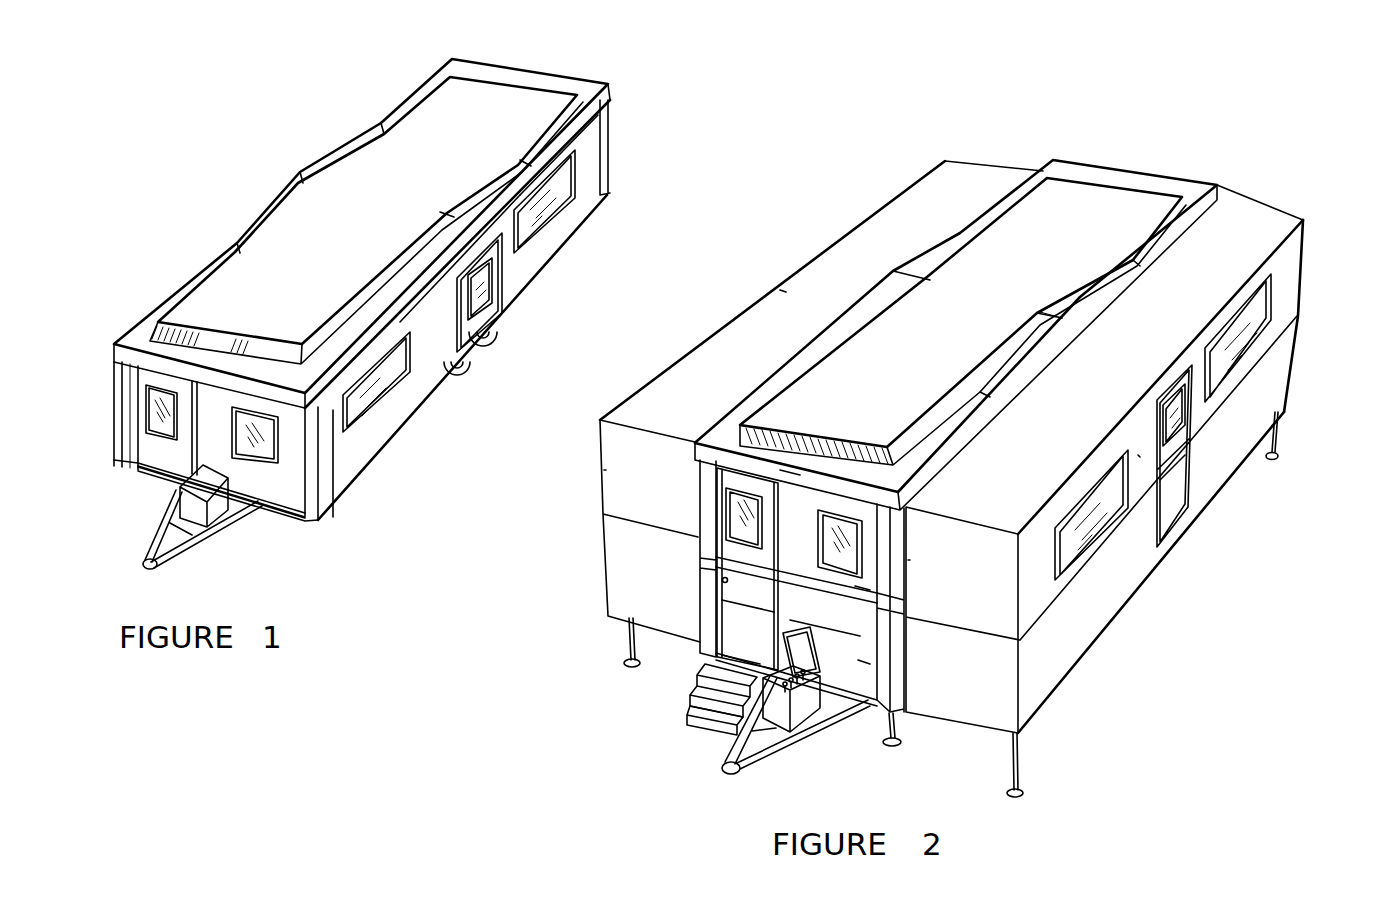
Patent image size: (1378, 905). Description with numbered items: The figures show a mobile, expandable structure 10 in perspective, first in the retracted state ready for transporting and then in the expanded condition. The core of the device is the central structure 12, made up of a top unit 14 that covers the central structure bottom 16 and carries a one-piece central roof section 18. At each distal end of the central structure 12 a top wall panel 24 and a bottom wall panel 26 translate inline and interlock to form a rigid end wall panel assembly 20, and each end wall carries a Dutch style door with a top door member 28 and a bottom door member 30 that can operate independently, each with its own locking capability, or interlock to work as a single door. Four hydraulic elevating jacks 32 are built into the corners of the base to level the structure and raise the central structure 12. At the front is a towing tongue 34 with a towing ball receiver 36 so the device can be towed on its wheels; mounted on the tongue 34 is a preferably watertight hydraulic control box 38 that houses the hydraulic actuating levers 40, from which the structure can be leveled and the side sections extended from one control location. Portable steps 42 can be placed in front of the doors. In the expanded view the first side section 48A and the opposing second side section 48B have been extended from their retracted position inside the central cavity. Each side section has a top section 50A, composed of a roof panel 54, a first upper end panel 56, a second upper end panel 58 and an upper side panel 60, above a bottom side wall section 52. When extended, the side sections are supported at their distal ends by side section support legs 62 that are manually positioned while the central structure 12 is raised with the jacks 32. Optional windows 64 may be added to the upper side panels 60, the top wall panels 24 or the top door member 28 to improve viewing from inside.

In FIG. 1, the mobile expandable structure 10 is at (644, 130).
In FIG. 2, the mobile expandable structure 10 is at (1156, 140).
In FIG. 1, the central structure 12 is at (136, 521).
In FIG. 2, the central structure 12 is at (676, 661).
In FIG. 1, the top unit 14 is at (262, 560).
In FIG. 2, the top unit 14 is at (862, 590).
In FIG. 1, the central structure bottom 16 is at (250, 535).
In FIG. 2, the central structure bottom 16 is at (864, 665).
In FIG. 1, the central roof section 18 is at (415, 163).
In FIG. 2, the central roof section 18 is at (1024, 250).
In FIG. 2, the end wall panel assembly 20 is at (790, 514).
In FIG. 1, the top wall panel 24 is at (277, 490).
In FIG. 2, the top wall panel 24 is at (803, 507).
In FIG. 2, the bottom wall panel 26 is at (822, 640).
In FIG. 1, the top door member 28 is at (485, 318).
In FIG. 2, the top door member 28 is at (732, 548).
In FIG. 2, the bottom door member 30 is at (727, 625).
In FIG. 2, the hydraulic elevating jack 32 is at (900, 718).
In FIG. 2, the towing tongue 34 is at (772, 752).
In FIG. 2, the towing ball receiver 36 is at (722, 763).
In FIG. 1, the hydraulic control box 38 is at (212, 507).
In FIG. 2, the hydraulic control box 38 is at (803, 707).
In FIG. 2, the hydraulic actuating lever 40 is at (720, 677).
In FIG. 2, the portable steps 42 is at (690, 718).
In FIG. 1, the first side section 48A is at (634, 196).
In FIG. 2, the first side section 48A is at (1200, 542).
In FIG. 2, the second side section 48B is at (575, 514).
In FIG. 1, the top section 50A is at (583, 254).
In FIG. 2, the top section 50A is at (1311, 283).
In FIG. 2, the bottom side wall section 52 is at (1227, 435).
In FIG. 2, the roof panel 54 is at (771, 337).
In FIG. 2, the first upper end panel 56 is at (619, 474).
In FIG. 2, the second upper end panel 58 is at (965, 162).
In FIG. 1, the upper side panel 60 is at (436, 353).
In FIG. 2, the upper side panel 60 is at (780, 288).
In FIG. 1, the side section support leg 62 is at (395, 378).
In FIG. 2, the side section support leg 62 is at (622, 653).
In FIG. 2, the window 64 is at (1100, 502).